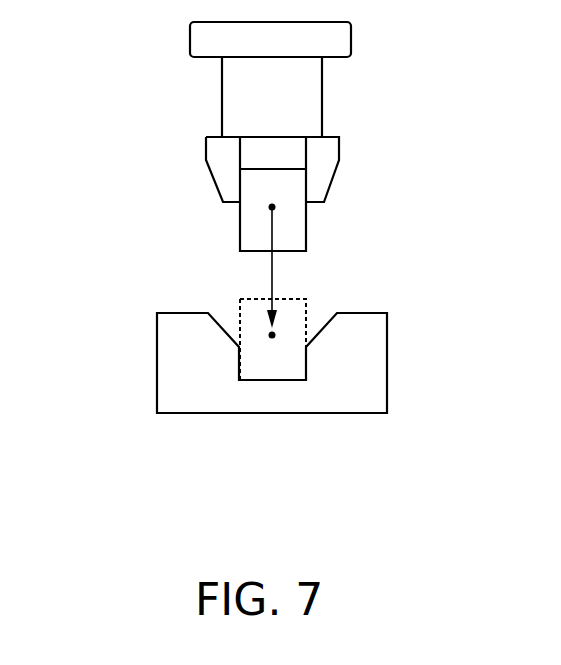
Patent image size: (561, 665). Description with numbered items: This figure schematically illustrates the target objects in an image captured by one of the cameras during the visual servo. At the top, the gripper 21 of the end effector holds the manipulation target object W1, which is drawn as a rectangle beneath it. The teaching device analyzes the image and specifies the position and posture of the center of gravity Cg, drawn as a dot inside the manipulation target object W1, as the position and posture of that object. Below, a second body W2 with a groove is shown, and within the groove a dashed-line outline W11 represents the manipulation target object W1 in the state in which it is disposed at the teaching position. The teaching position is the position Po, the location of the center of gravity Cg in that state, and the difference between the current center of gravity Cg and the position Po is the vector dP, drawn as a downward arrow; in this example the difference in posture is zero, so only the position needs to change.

The gripper 21 is at (322, 98).
The manipulation target object W1 is at (240, 230).
The manipulation target object at teaching position W11 is at (240, 313).
The second workpiece with groove W2 is at (157, 360).
The center of gravity Cg is at (272, 207).
The position Po is at (272, 335).
The vector dP is at (285, 267).